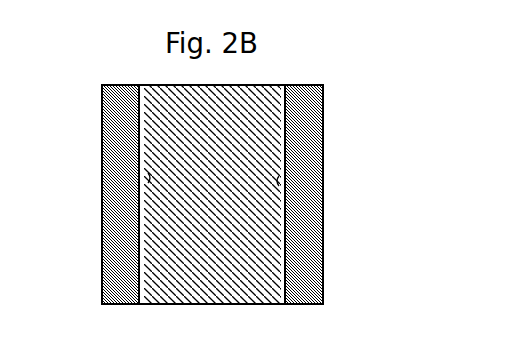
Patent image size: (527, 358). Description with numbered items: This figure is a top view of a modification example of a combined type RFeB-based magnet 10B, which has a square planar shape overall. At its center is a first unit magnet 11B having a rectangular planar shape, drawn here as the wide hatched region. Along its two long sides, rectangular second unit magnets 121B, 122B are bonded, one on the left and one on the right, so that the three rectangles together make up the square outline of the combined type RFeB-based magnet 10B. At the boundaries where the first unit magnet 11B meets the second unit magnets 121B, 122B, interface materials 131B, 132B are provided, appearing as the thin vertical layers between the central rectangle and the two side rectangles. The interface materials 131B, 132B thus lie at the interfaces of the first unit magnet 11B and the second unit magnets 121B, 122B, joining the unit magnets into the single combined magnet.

The combined type RFeB-based magnet 10B is at (316, 311).
The first unit magnet 11B is at (175, 280).
The second unit magnet 121B is at (115, 107).
The second unit magnet 122B is at (303, 105).
The interface material 131B is at (131, 157).
The interface material 132B is at (278, 155).